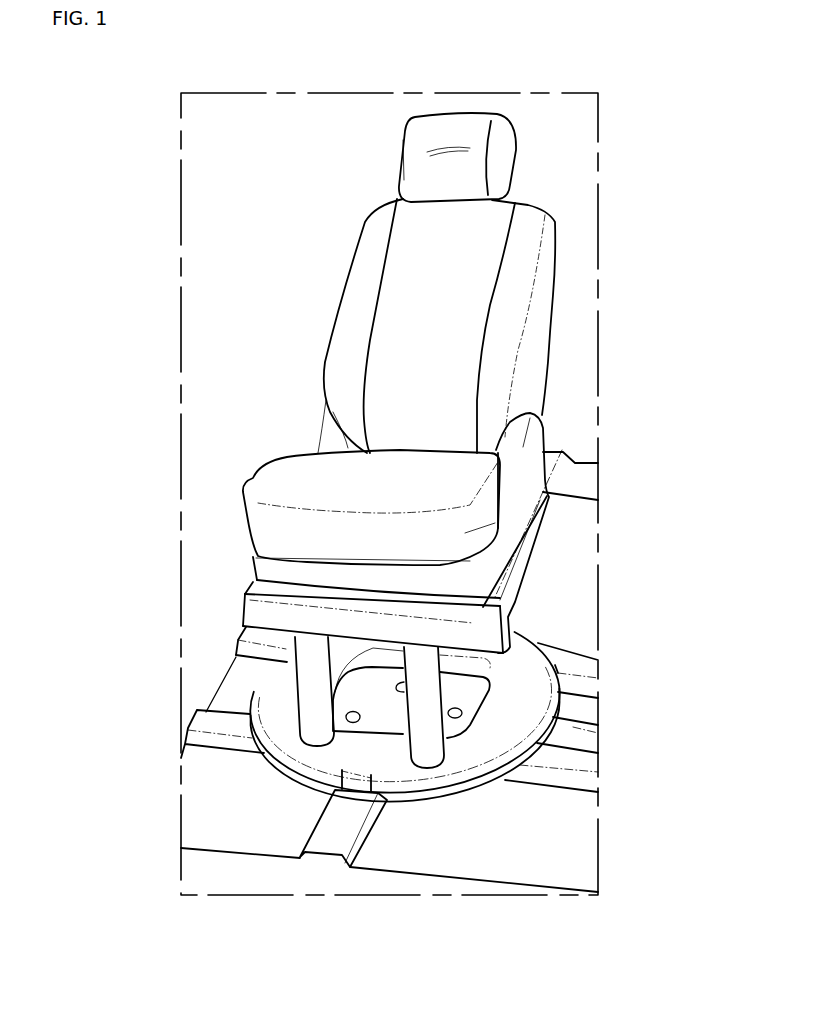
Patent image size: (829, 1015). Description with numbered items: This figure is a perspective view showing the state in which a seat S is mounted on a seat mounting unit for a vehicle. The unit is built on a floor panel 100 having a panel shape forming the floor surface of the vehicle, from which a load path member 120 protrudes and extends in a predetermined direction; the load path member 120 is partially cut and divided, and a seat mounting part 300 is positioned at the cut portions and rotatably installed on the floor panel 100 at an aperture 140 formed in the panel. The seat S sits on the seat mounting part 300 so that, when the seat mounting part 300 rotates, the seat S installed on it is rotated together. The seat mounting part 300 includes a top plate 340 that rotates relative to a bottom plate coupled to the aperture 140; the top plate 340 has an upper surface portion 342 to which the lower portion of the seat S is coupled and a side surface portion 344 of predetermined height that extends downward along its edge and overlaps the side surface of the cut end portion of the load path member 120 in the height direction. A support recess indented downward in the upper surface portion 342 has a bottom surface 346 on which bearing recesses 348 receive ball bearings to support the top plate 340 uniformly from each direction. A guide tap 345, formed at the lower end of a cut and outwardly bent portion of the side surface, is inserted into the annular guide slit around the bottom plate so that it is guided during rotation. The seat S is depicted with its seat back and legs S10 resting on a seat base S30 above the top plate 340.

The seat S is at (250, 491).
The seat base S30 is at (258, 609).
The seat legs S10 is at (308, 670).
The seat mounting part 300 is at (536, 643).
The top plate 340 is at (275, 684).
The upper surface portion 342 is at (475, 745).
The side surface portion 344 is at (293, 763).
The guide tap 345 is at (355, 780).
The bottom surface 346 is at (460, 690).
The bearing recesses 348 is at (462, 713).
The aperture 140 is at (590, 743).
The load path member 120 is at (590, 770).
The floor panel 100 is at (570, 855).